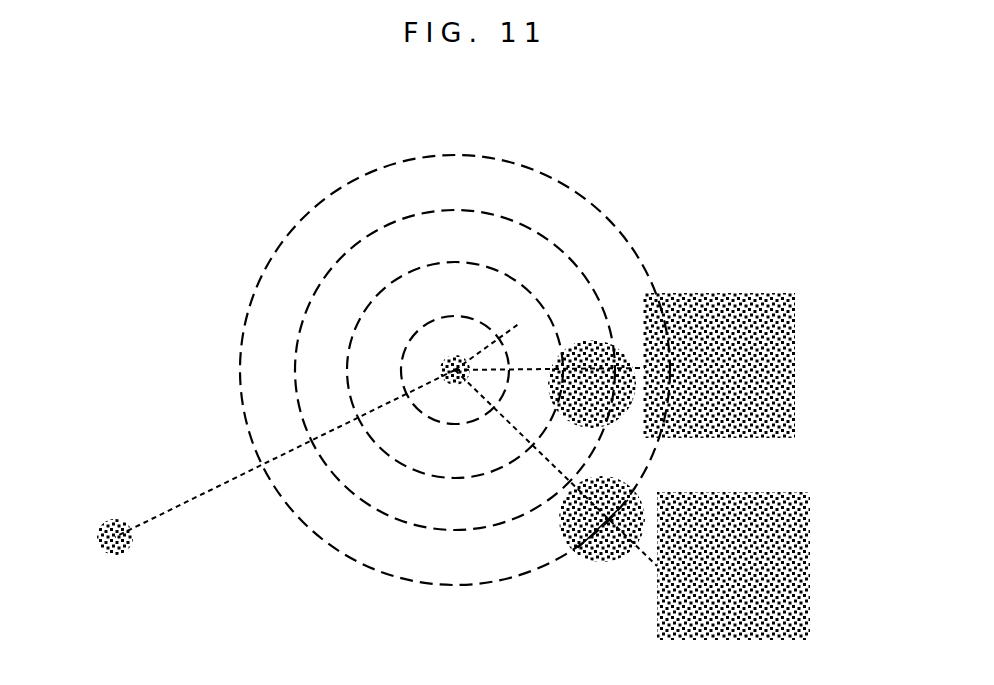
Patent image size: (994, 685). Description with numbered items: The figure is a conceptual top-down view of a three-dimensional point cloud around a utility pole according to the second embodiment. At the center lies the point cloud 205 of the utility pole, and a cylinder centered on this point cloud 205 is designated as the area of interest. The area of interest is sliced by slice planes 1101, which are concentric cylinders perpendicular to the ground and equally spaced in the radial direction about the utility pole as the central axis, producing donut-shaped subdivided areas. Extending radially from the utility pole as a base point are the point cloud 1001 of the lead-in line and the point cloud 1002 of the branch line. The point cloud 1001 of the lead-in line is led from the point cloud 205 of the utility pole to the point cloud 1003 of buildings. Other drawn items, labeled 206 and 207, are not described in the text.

The slice plane 1101 is at (283, 235).
The point cloud of branch line 1002 is at (505, 333).
The point cloud of lead-in line 1001 is at (543, 376).
The point cloud of buildings 1003 is at (797, 384).
The point cloud of utility pole 205 is at (441, 362).
The light path 206 is at (185, 496).
The object 207 is at (590, 556).